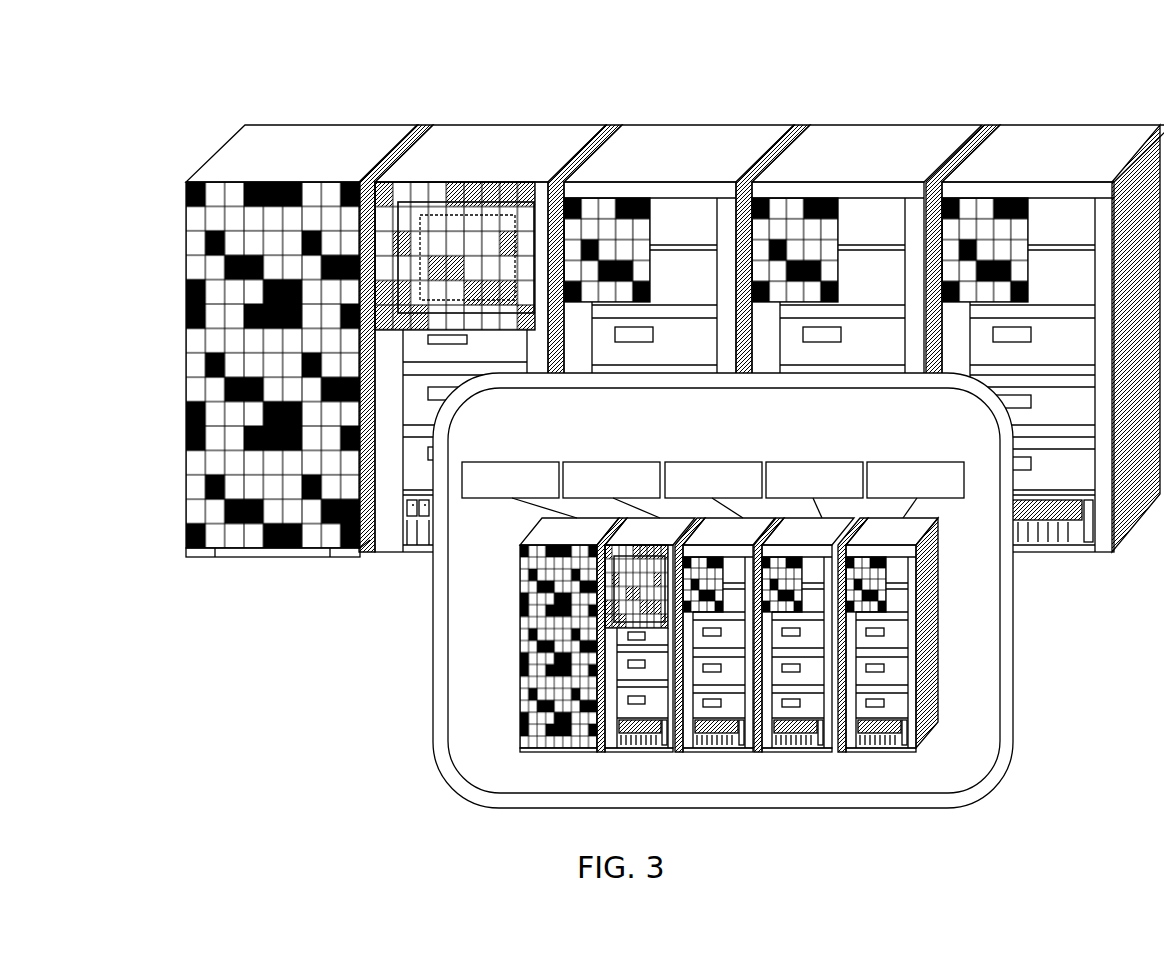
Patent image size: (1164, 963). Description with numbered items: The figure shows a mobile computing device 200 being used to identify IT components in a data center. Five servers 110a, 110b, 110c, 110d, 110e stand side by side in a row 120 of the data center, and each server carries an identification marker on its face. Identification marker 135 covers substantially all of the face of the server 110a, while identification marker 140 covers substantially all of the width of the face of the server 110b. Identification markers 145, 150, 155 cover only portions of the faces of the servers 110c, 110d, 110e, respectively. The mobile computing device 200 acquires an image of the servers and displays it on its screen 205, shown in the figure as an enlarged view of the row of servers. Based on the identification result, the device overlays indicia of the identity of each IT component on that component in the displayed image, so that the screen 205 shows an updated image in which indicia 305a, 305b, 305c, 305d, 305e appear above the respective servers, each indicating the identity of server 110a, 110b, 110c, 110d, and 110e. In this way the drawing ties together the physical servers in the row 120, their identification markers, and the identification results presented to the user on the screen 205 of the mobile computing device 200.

The row 120 is at (214, 122).
The server 110a is at (302, 295).
The server 110b is at (482, 293).
The server 110c is at (671, 300).
The server 110d is at (859, 300).
The server 110e is at (1045, 300).
The identification marker 135 is at (333, 186).
The identification marker 140 is at (478, 192).
The identification marker 145 is at (592, 200).
The identification marker 150 is at (762, 200).
The identification marker 155 is at (962, 200).
The mobile computing device 200 is at (1014, 633).
The screen 205 is at (473, 603).
The indicia 305a is at (514, 461).
The indicia 305b is at (616, 461).
The indicia 305c is at (718, 461).
The indicia 305d is at (819, 461).
The indicia 305e is at (921, 461).